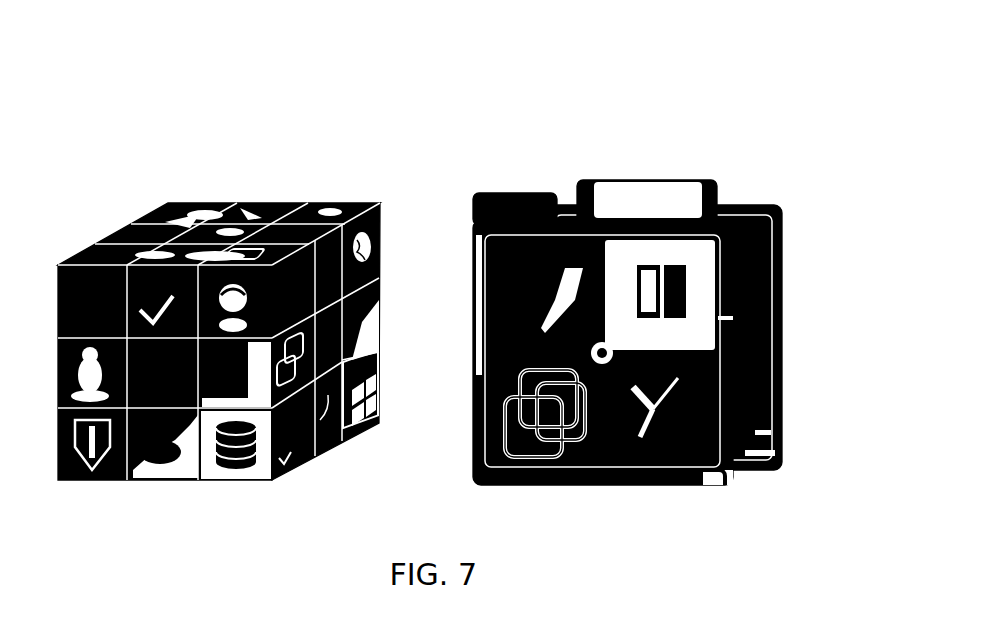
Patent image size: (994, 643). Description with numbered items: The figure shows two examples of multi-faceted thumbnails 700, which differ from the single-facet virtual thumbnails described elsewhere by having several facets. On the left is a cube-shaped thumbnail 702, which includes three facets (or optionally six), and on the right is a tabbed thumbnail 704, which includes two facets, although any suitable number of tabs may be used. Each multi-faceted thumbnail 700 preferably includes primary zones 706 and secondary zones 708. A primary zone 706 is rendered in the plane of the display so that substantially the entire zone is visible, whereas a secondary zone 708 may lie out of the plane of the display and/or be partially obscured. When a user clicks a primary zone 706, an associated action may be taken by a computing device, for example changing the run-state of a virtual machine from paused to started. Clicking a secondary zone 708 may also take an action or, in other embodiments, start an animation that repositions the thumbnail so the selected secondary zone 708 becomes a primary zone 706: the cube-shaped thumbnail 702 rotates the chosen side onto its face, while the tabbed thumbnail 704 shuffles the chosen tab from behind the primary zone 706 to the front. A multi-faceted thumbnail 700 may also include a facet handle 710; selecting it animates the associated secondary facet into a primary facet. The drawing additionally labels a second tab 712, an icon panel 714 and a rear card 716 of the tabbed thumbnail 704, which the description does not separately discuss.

The multi-faceted thumbnails 700 is at (463, 269).
The cube-shaped thumbnail 702 is at (228, 308).
The tabbed thumbnail 704 is at (644, 282).
The primary zone 706 is at (264, 464).
The secondary zone 708 is at (333, 349).
The facet handle 710 is at (488, 187).
The CONF tab of stacked thumbnail 712 is at (626, 177).
The icon panel of stacked thumbnail 714 is at (703, 273).
The rear card of stacked thumbnail 716 is at (699, 334).